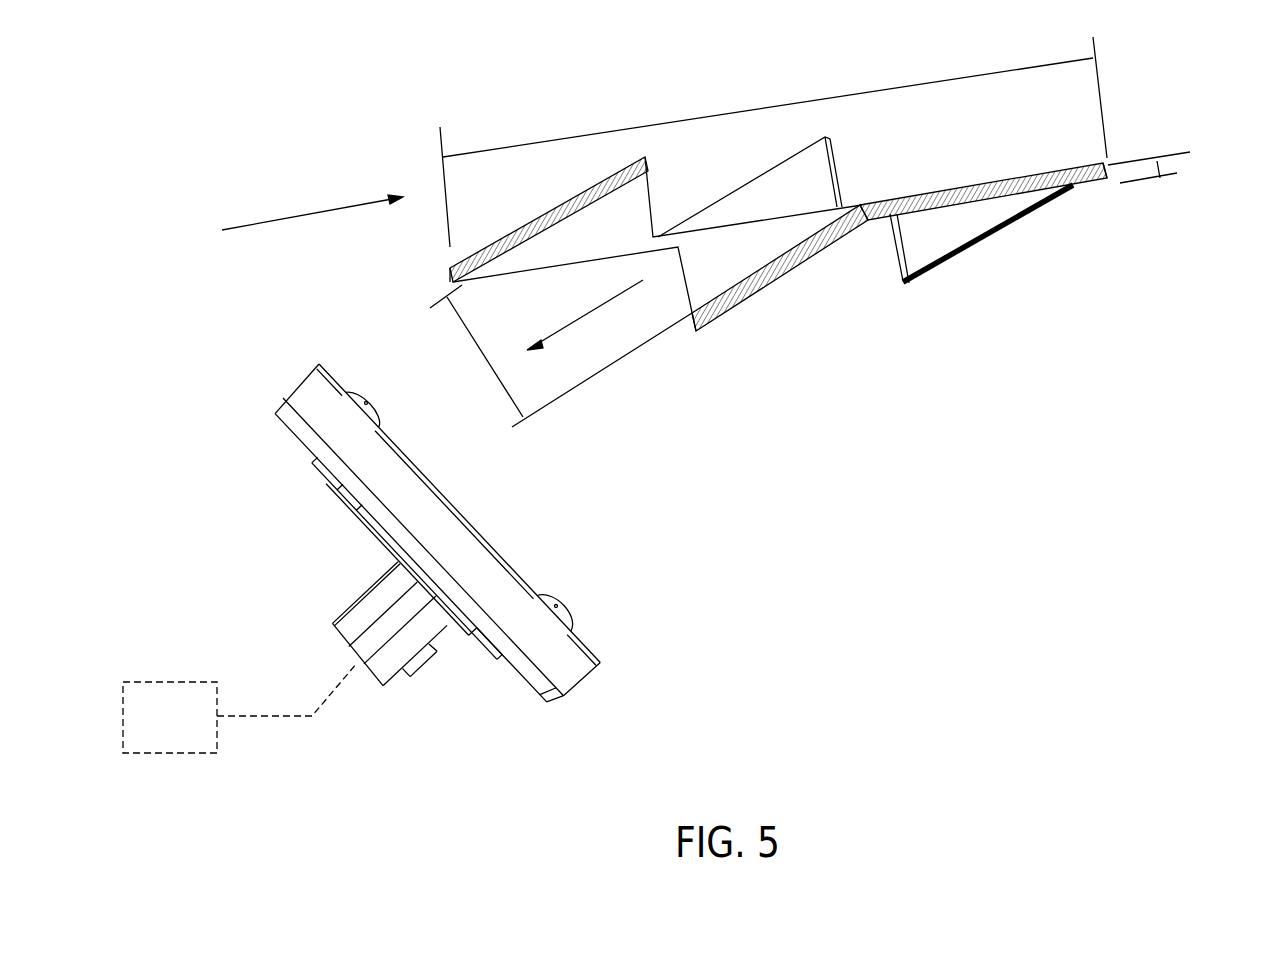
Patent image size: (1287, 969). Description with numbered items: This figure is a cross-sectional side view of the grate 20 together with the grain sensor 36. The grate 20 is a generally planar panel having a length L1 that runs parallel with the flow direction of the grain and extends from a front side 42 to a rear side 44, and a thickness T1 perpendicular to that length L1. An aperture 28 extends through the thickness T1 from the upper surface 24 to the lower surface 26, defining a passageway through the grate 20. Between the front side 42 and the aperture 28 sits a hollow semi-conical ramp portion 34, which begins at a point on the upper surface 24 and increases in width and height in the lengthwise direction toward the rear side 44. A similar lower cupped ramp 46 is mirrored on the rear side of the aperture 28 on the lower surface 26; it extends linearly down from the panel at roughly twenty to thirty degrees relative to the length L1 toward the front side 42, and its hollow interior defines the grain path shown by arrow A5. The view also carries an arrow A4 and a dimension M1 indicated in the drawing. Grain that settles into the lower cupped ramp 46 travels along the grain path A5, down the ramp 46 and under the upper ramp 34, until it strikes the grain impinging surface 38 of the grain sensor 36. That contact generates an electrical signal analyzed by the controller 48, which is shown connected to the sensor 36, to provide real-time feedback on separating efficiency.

The grate 20 is at (1002, 264).
The upper surface 24 is at (920, 192).
The lower surface 26 is at (1085, 185).
The aperture 28 is at (684, 201).
The ramp portion 34 is at (515, 236).
The grain sensor 36 is at (582, 685).
The grain impinging surface 38 is at (463, 505).
The front side 42 is at (450, 277).
The rear side 44 is at (1108, 168).
The lower cupped ramp 46 is at (765, 290).
The controller 48 is at (181, 731).
The arrow A4 is at (322, 210).
The grain path A5 is at (603, 305).
The length L1 is at (765, 107).
The distance M1 is at (480, 353).
The thickness T1 is at (1164, 163).